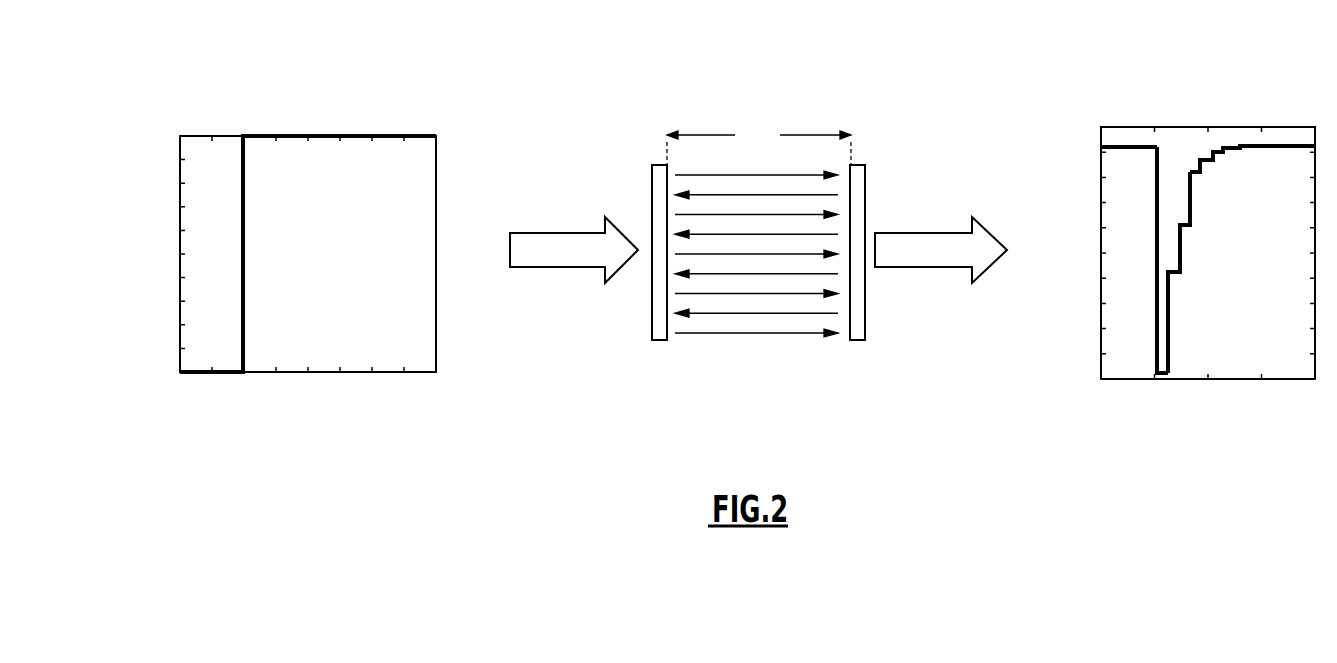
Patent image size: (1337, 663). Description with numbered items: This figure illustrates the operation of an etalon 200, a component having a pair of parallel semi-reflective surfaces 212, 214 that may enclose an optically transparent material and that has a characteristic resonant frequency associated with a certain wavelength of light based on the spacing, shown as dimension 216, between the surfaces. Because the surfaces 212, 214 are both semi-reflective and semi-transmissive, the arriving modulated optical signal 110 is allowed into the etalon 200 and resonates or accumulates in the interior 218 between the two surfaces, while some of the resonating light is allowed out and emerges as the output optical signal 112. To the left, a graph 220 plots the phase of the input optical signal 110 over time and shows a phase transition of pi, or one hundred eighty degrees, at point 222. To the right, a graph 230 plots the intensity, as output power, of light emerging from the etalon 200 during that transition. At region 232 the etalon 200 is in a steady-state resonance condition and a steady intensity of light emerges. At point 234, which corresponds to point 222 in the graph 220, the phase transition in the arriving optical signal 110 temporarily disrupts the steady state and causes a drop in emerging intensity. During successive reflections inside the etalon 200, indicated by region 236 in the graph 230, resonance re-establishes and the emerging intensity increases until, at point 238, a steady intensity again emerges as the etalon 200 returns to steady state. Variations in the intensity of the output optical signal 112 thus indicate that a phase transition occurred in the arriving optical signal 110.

The modulated optical signal 110 is at (555, 232).
The output optical signal 112 is at (910, 233).
The etalon 200 is at (759, 209).
The semi-reflective surface 212 is at (642, 190).
The semi-reflective surface 214 is at (878, 190).
The dimension 216 is at (759, 143).
The interior 218 is at (759, 354).
The graph 220 is at (284, 225).
The point 222 is at (242, 122).
The graph 230 is at (1183, 220).
The region 232 is at (1123, 137).
The point 234 is at (1159, 167).
The region 236 is at (1183, 255).
The point 238 is at (1273, 147).